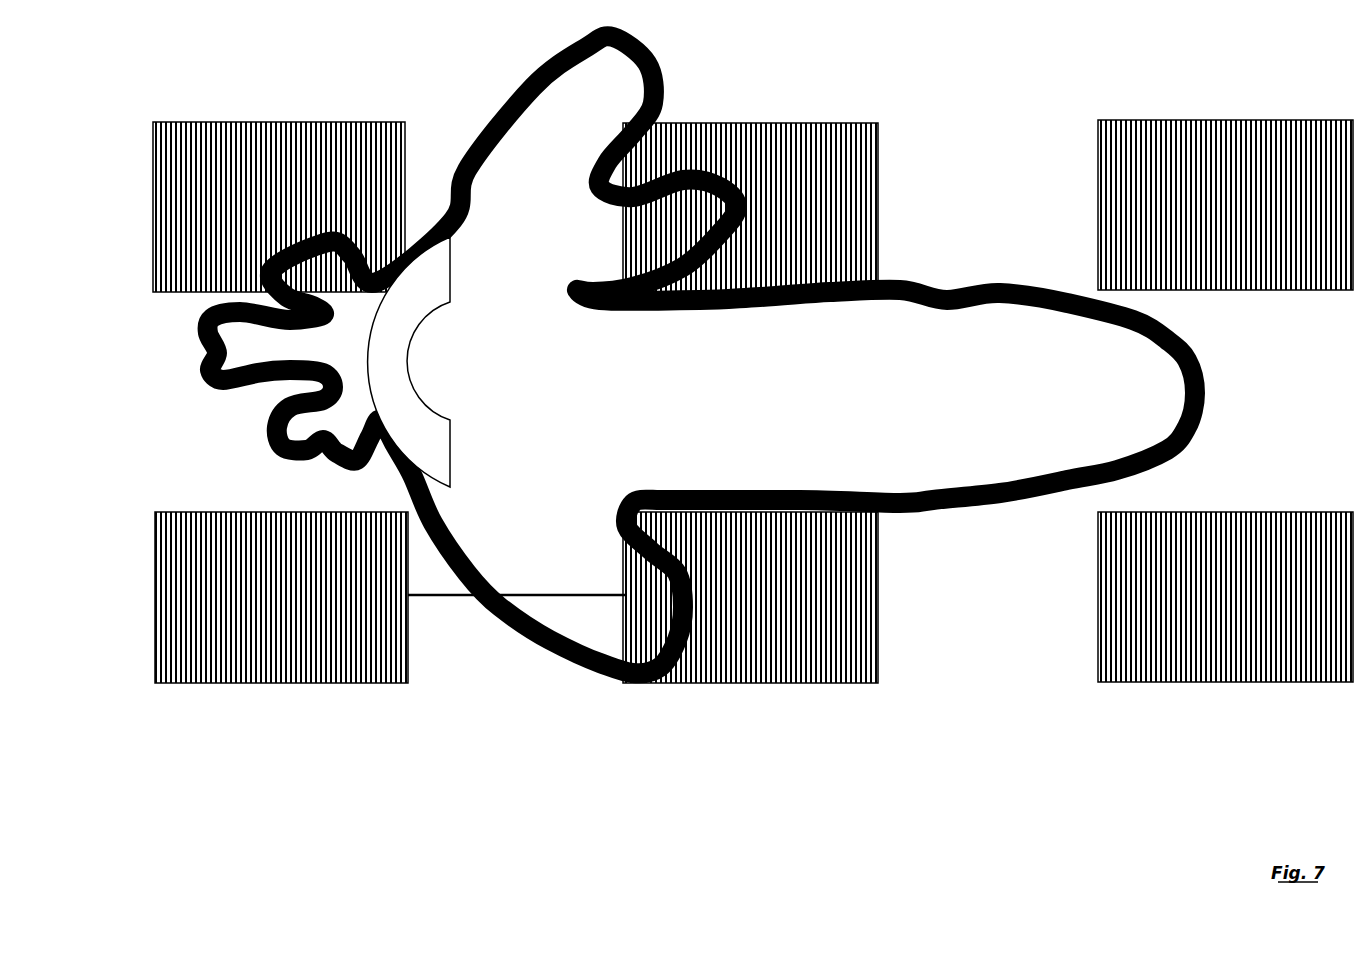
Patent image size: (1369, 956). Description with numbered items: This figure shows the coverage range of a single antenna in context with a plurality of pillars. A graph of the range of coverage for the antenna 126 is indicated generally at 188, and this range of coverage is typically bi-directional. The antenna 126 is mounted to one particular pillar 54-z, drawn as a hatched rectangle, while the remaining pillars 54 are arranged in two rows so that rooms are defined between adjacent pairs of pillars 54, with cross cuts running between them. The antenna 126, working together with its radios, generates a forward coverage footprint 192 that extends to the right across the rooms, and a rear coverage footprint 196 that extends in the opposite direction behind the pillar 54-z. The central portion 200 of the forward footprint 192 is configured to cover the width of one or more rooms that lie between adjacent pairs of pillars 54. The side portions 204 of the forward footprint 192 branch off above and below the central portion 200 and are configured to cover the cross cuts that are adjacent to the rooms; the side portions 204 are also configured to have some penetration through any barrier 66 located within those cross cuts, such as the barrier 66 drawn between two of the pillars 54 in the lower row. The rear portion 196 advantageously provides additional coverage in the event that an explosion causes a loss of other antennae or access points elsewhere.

The pillar 54-z is at (291, 208).
The pillars 54 is at (752, 216).
The barrier 66 is at (453, 598).
The central portion 200 is at (812, 396).
The side portions 204 is at (517, 249).
The antenna 126 is at (367, 363).
The rear coverage footprint 196 is at (201, 321).
The forward coverage footprint 192 is at (1204, 398).
The range of coverage 188 is at (1219, 422).